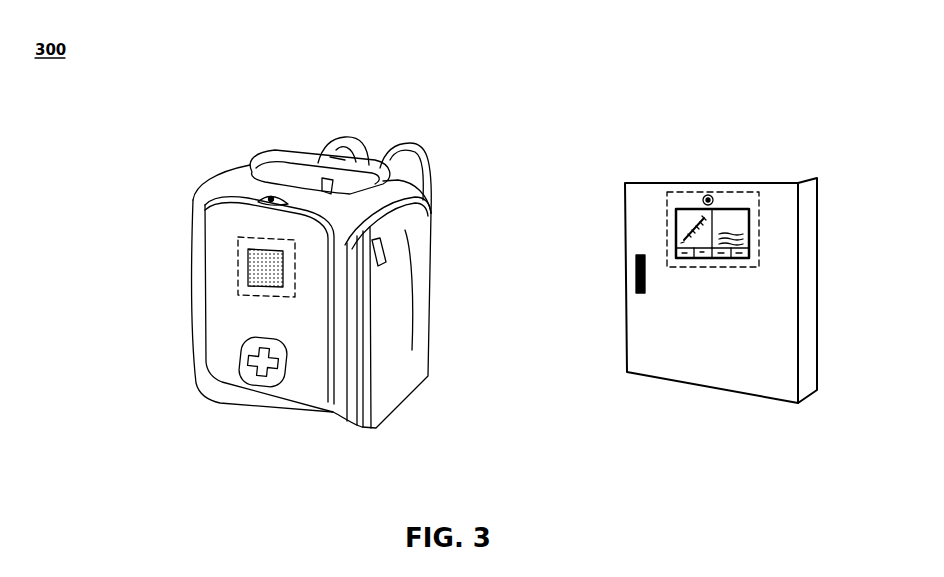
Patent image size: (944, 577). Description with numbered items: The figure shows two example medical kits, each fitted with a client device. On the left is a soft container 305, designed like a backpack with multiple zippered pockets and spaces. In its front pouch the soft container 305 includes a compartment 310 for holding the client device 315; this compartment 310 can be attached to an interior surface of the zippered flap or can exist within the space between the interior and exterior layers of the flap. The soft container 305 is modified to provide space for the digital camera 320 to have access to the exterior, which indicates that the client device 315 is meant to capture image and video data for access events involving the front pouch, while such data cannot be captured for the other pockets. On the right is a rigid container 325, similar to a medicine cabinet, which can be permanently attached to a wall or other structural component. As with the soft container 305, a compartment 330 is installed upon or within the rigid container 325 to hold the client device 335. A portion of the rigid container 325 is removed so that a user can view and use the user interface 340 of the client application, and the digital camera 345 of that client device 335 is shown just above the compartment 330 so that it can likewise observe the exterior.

The soft container 305 is at (228, 185).
The compartment 310 is at (245, 244).
The client device 315 is at (262, 290).
The digital camera 320 is at (272, 197).
The rigid container 325 is at (642, 183).
The compartment 330 is at (663, 234).
The client device 335 is at (678, 257).
The user interface 340 is at (696, 246).
The digital camera 345 is at (707, 195).